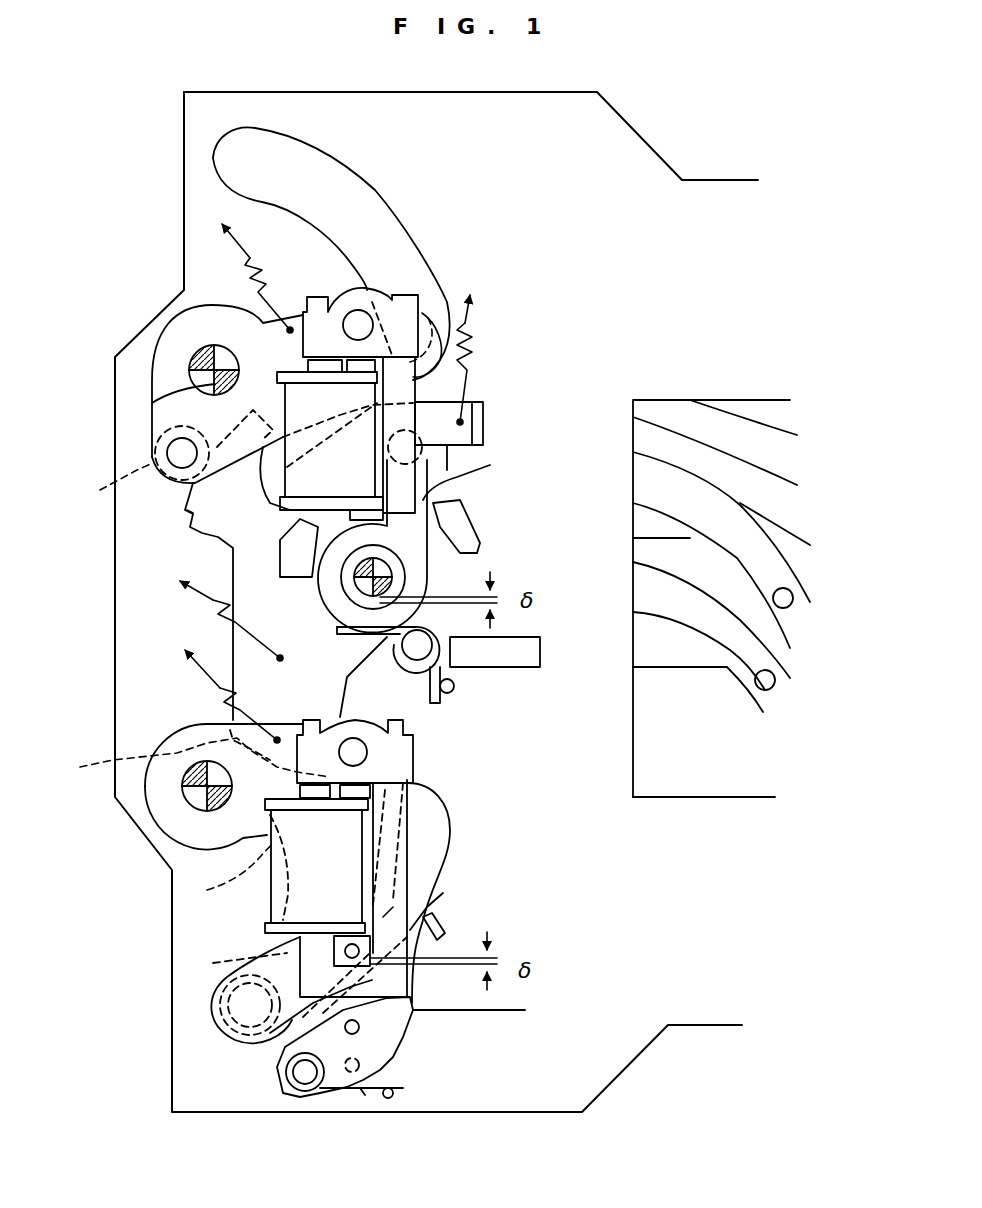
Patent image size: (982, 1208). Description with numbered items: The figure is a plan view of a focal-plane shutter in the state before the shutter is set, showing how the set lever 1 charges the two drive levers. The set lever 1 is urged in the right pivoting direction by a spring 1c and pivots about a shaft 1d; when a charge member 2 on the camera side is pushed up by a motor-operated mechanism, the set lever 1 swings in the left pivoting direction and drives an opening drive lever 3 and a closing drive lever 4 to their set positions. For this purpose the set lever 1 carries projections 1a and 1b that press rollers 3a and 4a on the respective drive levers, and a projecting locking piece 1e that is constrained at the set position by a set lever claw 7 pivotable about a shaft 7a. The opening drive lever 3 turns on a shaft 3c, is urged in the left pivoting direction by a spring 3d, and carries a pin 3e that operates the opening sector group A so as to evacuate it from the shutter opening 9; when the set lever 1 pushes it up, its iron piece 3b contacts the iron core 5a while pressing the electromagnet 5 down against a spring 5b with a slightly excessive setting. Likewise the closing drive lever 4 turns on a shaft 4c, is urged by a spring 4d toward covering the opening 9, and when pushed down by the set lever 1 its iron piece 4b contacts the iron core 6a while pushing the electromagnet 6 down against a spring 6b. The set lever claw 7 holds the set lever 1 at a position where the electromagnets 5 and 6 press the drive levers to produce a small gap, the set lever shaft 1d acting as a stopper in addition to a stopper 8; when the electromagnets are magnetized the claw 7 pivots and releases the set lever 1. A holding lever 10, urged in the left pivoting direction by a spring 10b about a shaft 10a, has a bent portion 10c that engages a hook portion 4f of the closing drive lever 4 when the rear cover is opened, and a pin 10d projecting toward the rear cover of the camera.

The set lever 1 is at (437, 533).
The projection 1a is at (195, 508).
The projection 1b is at (189, 760).
The spring 1c is at (213, 600).
The shaft 1d is at (360, 587).
The locking piece 1e is at (313, 535).
The charge member 2 is at (510, 643).
The opening drive lever 3 is at (153, 372).
The roller 3a is at (103, 485).
The iron piece 3b is at (367, 290).
The shaft 3c is at (152, 405).
The spring 3d is at (250, 258).
The pin 3e is at (430, 300).
The closing drive lever 4 is at (177, 833).
The roller 4a is at (226, 873).
The iron piece 4b is at (410, 757).
The shaft 4c is at (187, 795).
The spring 4d is at (220, 688).
The hook portion 4f is at (410, 900).
The electromagnet 5 is at (257, 490).
The iron core 5a is at (463, 480).
The spring 5b is at (400, 657).
The electromagnet 6 is at (267, 903).
The iron core 6a is at (410, 872).
The spring 6b is at (470, 1010).
The set lever claw 7 is at (462, 423).
The shaft 7a is at (346, 438).
The stopper 8 is at (350, 903).
The shutter opening 9 is at (718, 400).
The holding lever 10 is at (407, 1027).
The shaft 10a is at (297, 1083).
The spring 10b is at (363, 1093).
The bent portion 10c is at (445, 930).
The pin 10d is at (360, 1063).
The opening sector group A is at (686, 769).